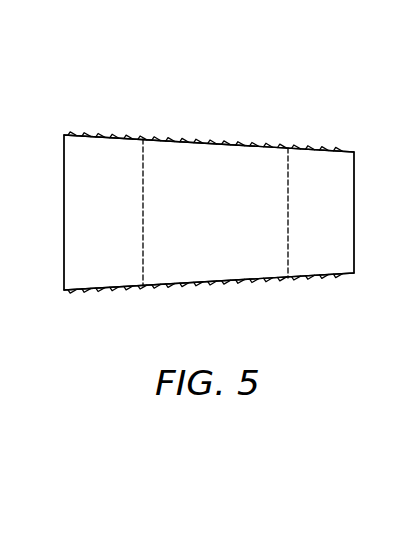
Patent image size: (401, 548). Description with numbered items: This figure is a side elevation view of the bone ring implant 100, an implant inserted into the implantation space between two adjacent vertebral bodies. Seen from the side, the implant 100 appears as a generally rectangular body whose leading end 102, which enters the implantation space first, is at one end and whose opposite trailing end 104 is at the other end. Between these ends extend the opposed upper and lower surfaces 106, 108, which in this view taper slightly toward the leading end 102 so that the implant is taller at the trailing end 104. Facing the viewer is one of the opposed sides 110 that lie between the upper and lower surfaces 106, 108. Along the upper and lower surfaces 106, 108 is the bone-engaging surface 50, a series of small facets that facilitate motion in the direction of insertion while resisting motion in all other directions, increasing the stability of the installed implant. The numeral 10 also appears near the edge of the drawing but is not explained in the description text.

The sleeve assembly 10 is at (0, 170).
The bone-engaging surface 50 is at (300, 136).
The bone ring implant 100 is at (193, 121).
The leading end 102 is at (354, 218).
The trailing end 104 is at (64, 233).
The upper surface 106 is at (105, 137).
The lower surface 108 is at (270, 283).
The side 110 is at (216, 228).